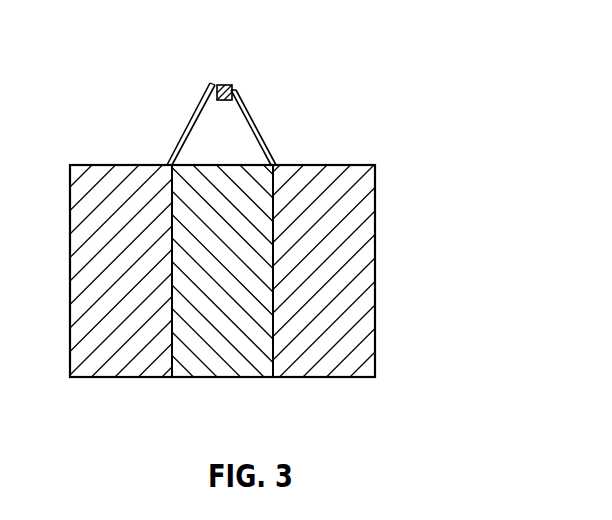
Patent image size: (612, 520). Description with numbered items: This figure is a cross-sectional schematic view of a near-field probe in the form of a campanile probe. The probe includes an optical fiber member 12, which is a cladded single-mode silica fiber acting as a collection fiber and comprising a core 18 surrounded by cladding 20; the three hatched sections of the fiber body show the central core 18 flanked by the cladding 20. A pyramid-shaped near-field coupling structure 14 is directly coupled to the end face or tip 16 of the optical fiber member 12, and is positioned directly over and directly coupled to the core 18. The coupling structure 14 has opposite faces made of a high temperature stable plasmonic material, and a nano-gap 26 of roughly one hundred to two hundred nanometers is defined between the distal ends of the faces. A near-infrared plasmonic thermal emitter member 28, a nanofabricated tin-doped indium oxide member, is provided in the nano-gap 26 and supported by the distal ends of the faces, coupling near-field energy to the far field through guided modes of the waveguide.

The optical fiber member 12 is at (259, 268).
The near-field coupling structure 14 is at (246, 89).
The tip 16 is at (158, 164).
The core 18 is at (208, 358).
The cladding 20 is at (358, 238).
The nano-gap 26 is at (227, 85).
The near-infrared plasmonic thermal emitter member 28 is at (240, 89).